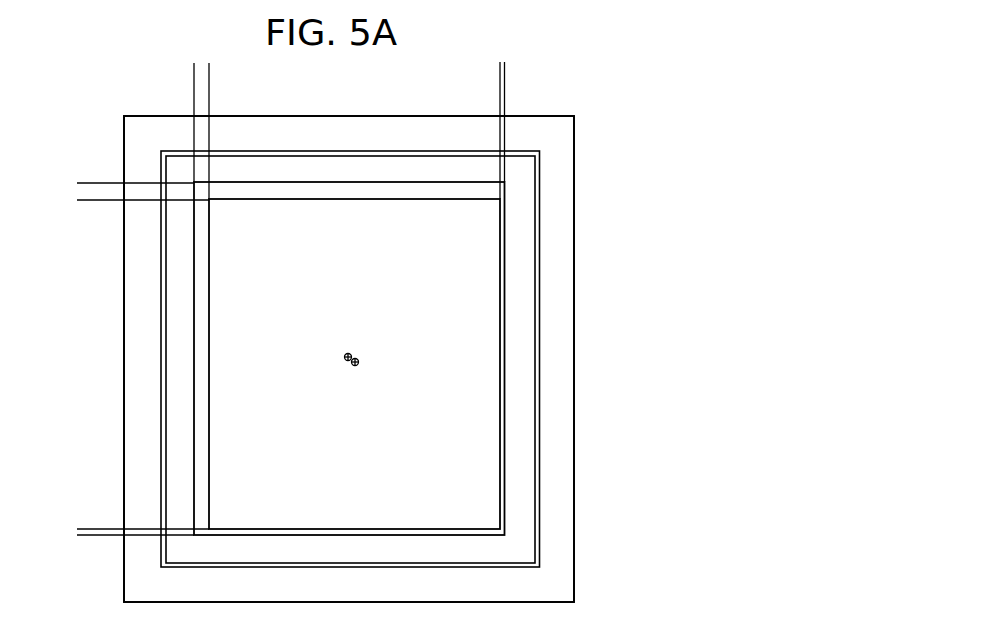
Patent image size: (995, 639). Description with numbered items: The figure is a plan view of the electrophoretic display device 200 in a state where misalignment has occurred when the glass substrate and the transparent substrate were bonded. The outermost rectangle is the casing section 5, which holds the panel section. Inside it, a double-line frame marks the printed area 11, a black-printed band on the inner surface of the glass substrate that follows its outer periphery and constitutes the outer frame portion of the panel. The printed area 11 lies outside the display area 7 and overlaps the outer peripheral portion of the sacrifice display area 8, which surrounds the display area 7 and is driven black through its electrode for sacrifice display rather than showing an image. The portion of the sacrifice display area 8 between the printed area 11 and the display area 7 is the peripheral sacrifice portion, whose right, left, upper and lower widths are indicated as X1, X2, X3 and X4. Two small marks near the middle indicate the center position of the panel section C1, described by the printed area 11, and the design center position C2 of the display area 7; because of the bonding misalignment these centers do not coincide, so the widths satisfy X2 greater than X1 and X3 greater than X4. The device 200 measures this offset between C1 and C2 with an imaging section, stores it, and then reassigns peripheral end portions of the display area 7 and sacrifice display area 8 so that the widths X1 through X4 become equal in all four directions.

The electrophoretic display device 200 is at (575, 90).
The casing section 5 is at (570, 393).
The printed area 11 is at (336, 163).
The sacrifice display area 8 is at (503, 449).
The display area 7 is at (475, 498).
The center position of the panel section C1 is at (349, 353).
The design center position in the display area C2 is at (358, 361).
The right sacrifice portion width X1 is at (535, 71).
The left sacrifice portion width X2 is at (237, 71).
The upper sacrifice portion width X3 is at (81, 155).
The lower sacrifice portion width X4 is at (81, 503).